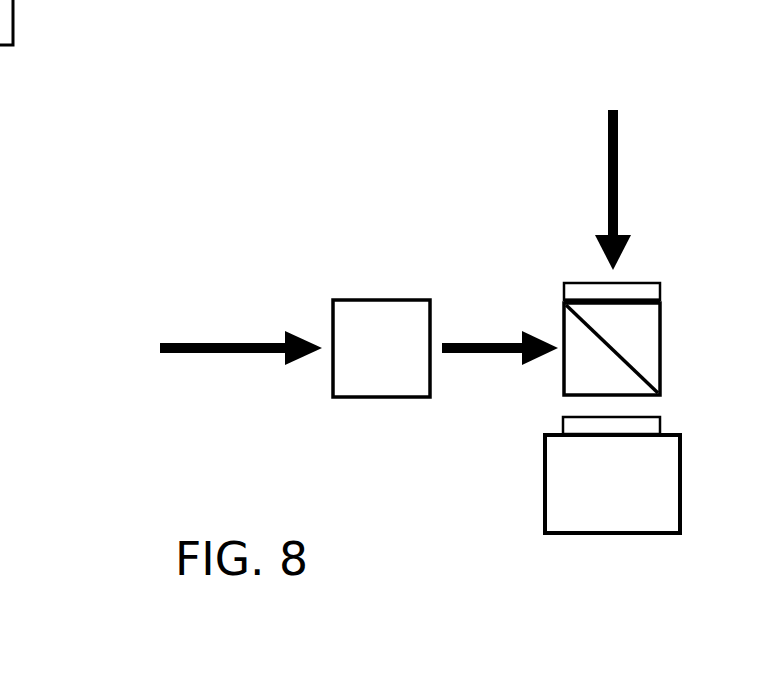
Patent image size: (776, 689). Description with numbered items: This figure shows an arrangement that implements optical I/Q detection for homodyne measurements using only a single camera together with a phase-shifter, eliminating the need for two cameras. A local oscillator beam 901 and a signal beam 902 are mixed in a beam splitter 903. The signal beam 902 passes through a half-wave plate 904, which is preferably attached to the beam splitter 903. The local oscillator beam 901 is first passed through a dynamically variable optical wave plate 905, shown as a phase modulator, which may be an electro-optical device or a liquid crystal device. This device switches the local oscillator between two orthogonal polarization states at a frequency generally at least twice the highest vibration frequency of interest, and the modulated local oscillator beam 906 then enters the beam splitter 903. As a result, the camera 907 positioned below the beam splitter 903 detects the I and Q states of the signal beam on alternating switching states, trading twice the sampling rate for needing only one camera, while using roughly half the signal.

The local oscillator beam 901 is at (222, 353).
The signal beam 902 is at (617, 158).
The beam splitter 903 is at (598, 315).
The half-wave plate 904 is at (645, 285).
The dynamically variable optical wave plate 905 is at (382, 397).
The modulated LO beam 906 is at (498, 353).
The camera 907 is at (575, 533).